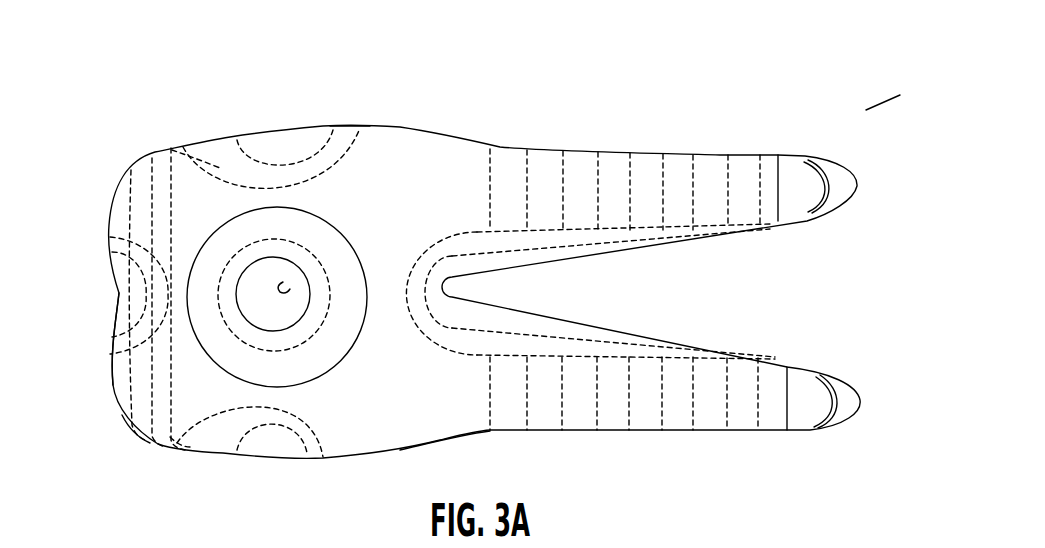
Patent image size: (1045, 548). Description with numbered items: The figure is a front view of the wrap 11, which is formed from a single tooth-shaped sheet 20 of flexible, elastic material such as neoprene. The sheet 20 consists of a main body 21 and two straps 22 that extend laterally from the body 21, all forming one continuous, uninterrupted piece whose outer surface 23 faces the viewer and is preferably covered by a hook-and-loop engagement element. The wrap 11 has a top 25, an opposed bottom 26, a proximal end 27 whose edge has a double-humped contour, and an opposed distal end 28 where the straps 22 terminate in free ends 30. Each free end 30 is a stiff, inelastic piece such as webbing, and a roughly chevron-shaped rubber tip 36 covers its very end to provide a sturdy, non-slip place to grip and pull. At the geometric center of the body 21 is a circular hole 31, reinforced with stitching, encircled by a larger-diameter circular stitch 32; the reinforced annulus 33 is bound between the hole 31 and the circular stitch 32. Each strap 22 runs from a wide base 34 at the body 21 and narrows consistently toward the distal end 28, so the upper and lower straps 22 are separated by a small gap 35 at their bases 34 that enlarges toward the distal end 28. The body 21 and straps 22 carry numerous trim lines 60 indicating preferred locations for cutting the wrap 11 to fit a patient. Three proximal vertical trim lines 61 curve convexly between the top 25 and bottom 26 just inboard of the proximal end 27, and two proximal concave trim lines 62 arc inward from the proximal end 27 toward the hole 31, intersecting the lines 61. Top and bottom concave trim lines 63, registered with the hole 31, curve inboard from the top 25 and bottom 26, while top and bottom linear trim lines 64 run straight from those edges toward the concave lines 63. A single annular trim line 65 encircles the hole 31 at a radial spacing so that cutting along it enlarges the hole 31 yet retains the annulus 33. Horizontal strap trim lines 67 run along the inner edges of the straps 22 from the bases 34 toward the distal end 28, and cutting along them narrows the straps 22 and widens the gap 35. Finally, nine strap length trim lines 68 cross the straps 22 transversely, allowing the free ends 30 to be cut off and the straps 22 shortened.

The wrap 11 is at (870, 107).
The tooth-shaped sheet 20 is at (433, 157).
The main body 21 is at (270, 117).
The straps 22 is at (733, 247).
The outer surface 23 is at (427, 415).
The top 25 is at (353, 127).
The bottom 26 is at (323, 463).
The proximal end 27 is at (110, 383).
The distal end 28 is at (860, 407).
The free ends 30 is at (812, 228).
The circular hole 31 is at (290, 280).
The circular stitch 32 is at (343, 240).
The annulus 33 is at (330, 265).
The base 34 is at (440, 440).
The gap 35 is at (473, 286).
The rubber tip 36 is at (840, 200).
The trim lines 60 is at (230, 257).
The proximal vertical trim lines 61 is at (177, 437).
The proximal concave trim lines 62 is at (118, 275).
The top and bottom concave trim lines 63 is at (310, 145).
The top and bottom linear trim lines 64 is at (357, 140).
The annular trim line 65 is at (323, 320).
The horizontal strap trim lines 67 is at (577, 233).
The strap length trim lines 68 is at (602, 170).